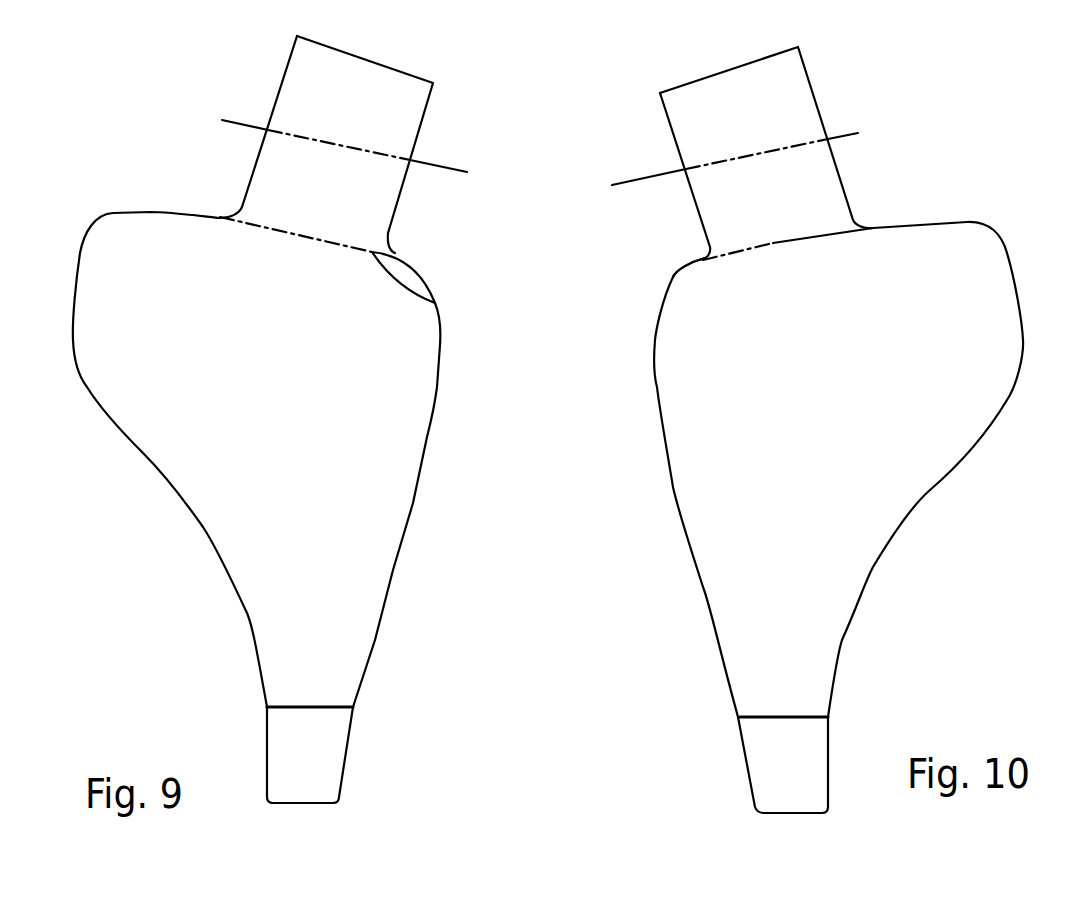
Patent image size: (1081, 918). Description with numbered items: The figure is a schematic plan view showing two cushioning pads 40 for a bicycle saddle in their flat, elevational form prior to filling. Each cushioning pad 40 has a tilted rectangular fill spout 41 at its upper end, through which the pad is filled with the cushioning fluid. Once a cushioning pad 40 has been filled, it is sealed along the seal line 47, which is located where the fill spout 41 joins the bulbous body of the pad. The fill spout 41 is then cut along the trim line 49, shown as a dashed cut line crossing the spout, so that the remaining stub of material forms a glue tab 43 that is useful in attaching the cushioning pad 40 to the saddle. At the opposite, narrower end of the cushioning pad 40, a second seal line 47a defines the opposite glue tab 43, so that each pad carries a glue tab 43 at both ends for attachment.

In FIG. 9, the cushioning pad 40 is at (413, 505).
In FIG. 10, the cushioning pad 40 is at (673, 497).
In FIG. 9, the fill spout 41 is at (275, 158).
In FIG. 10, the fill spout 41 is at (818, 168).
In FIG. 9, the glue tab 43 is at (390, 202).
In FIG. 10, the glue tab 43 is at (693, 200).
In FIG. 9, the seal line 47 is at (435, 303).
In FIG. 10, the seal line 47 is at (700, 259).
In FIG. 9, the seal line 47a is at (343, 707).
In FIG. 10, the seal line 47a is at (788, 717).
In FIG. 9, the trim line 49 is at (344, 146).
In FIG. 10, the trim line 49 is at (638, 177).